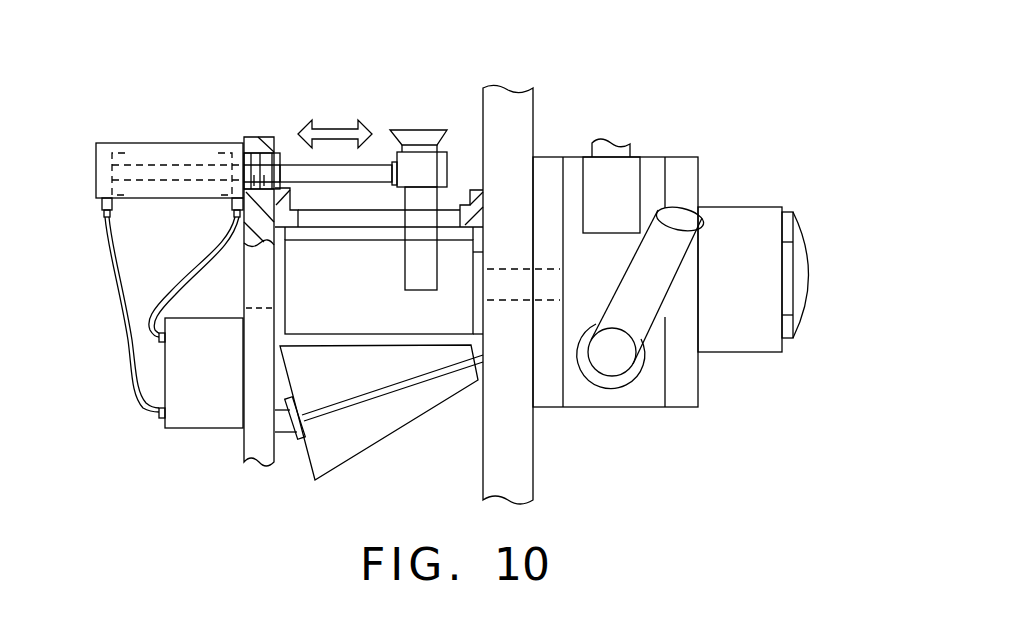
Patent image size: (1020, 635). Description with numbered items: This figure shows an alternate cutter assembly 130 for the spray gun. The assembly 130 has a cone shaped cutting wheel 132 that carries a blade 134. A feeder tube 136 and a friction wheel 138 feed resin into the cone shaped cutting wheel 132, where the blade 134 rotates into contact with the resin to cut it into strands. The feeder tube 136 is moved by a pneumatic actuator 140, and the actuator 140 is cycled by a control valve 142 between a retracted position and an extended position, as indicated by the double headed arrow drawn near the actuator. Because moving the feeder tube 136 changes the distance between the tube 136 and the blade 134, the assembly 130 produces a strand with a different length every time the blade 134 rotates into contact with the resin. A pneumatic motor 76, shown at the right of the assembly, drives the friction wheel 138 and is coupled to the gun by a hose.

The alternate cutter assembly 130 is at (277, 84).
The cone shaped cutting wheel 132 is at (395, 420).
The blade 134 is at (335, 405).
The feeder tube 136 is at (420, 200).
The friction wheel 138 is at (358, 307).
The pneumatic actuator 140 is at (152, 140).
The control valve 142 is at (182, 402).
The pneumatic motor 76 is at (647, 392).